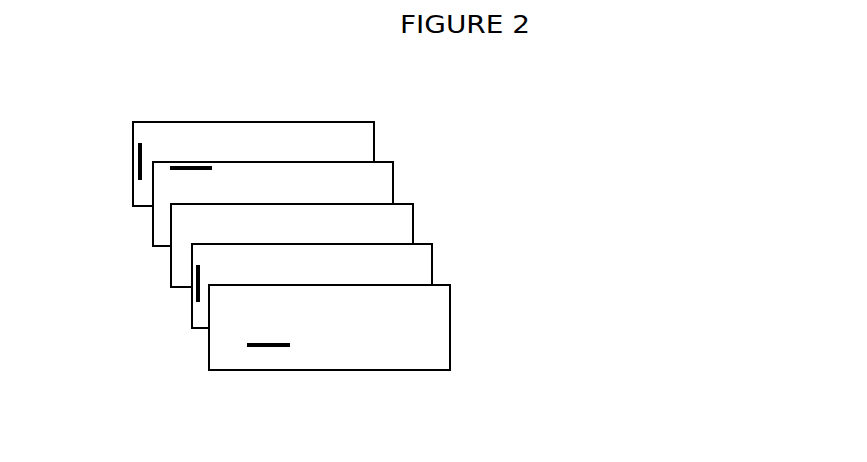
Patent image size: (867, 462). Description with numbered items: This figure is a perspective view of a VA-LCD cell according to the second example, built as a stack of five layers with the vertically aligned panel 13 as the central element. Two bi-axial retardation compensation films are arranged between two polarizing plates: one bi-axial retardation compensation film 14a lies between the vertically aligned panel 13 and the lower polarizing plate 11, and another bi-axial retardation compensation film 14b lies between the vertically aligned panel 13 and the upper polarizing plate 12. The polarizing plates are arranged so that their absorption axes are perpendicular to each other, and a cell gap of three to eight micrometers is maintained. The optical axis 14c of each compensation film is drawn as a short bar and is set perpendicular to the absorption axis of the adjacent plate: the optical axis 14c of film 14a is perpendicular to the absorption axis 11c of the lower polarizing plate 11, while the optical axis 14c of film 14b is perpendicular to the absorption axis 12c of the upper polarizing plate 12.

The lower polarizing plate 11 is at (374, 133).
The absorption axis of lower polarizing plate 11c is at (137, 163).
The bi-axial retardation compensation film 14a is at (393, 183).
The optical axis of bi-axial retardation compensation film 14c is at (172, 168).
The vertically aligned panel 13 is at (413, 224).
The bi-axial retardation compensation film 14b is at (432, 265).
The upper polarizing plate 12 is at (450, 315).
The absorption axis of upper polarizing plate 12c is at (265, 347).